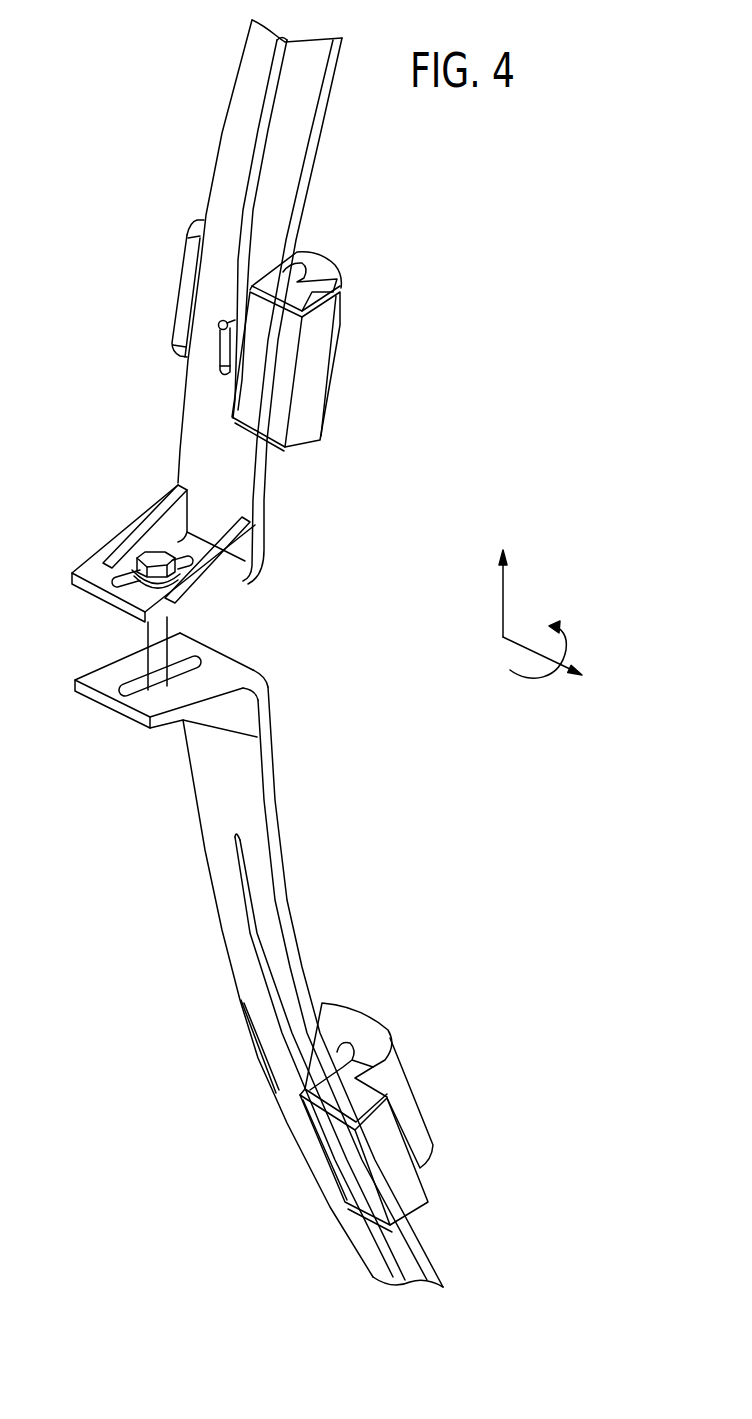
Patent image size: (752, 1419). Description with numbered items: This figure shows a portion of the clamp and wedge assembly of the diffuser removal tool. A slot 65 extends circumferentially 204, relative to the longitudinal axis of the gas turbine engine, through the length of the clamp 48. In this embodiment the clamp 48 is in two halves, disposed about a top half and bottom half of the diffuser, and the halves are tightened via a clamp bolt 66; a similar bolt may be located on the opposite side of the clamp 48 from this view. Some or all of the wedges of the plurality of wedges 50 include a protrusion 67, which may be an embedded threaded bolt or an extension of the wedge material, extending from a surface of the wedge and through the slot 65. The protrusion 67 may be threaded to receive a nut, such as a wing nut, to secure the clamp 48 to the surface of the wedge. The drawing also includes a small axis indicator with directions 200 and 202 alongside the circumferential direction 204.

The clamp 48 is at (325, 103).
The slot 65 is at (287, 43).
The protrusion 67 is at (218, 323).
The plurality of wedges 50 is at (318, 375).
The clamp bolt 66 is at (143, 642).
The longitudinal axis 200 is at (538, 652).
The vertical axis 202 is at (503, 597).
The circumferential direction 204 is at (547, 667).